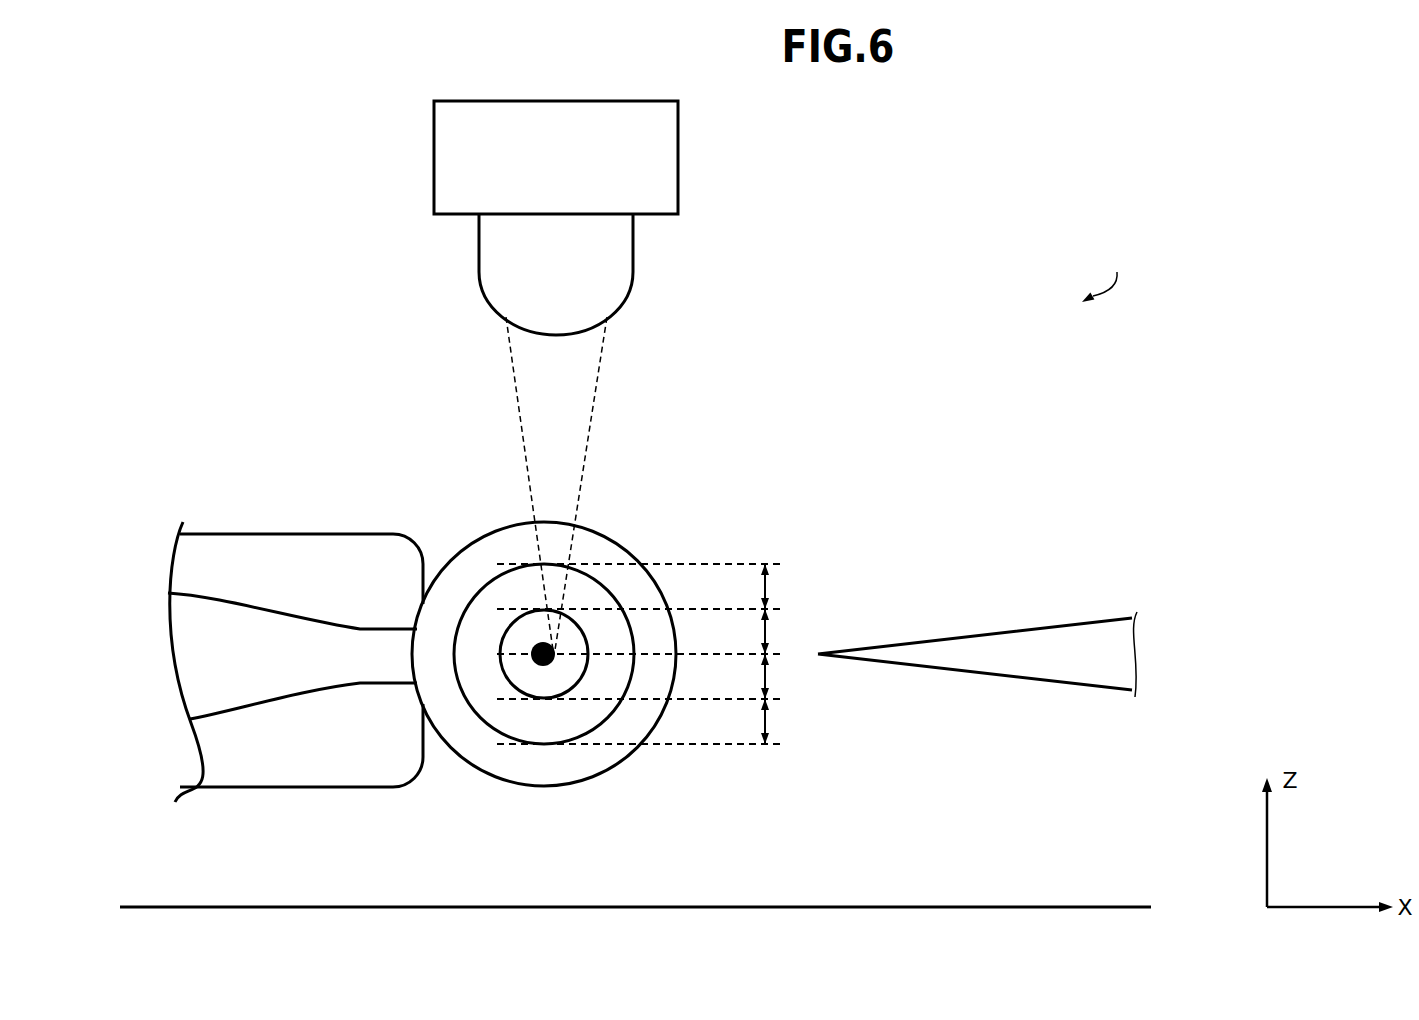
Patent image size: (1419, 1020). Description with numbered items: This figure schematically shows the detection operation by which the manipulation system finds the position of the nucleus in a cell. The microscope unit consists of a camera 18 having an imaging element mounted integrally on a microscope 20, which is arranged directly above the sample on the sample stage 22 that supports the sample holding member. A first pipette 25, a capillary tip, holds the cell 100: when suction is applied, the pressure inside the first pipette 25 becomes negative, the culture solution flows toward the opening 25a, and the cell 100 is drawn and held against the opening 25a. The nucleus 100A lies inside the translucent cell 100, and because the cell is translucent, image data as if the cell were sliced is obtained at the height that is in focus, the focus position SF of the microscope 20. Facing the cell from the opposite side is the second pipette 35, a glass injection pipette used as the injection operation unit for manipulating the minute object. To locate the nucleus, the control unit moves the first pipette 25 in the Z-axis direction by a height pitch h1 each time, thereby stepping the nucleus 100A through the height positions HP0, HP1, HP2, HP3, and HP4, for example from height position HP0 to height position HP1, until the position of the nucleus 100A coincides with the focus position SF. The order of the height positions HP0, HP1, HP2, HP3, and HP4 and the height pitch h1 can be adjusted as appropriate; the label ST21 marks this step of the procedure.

The camera 18 is at (678, 152).
The microscope 20 is at (633, 246).
The first pipette 25 is at (284, 534).
The opening 25a is at (376, 624).
The cell 100 is at (550, 787).
The nucleus 100A is at (532, 660).
The focus position SF is at (555, 652).
The height position HP0 is at (738, 654).
The height position HP1 is at (702, 609).
The height position HP2 is at (657, 564).
The height position HP3 is at (737, 698).
The height position HP4 is at (667, 745).
The height pitch h1 is at (768, 581).
The second pipette 35 is at (1055, 625).
The step ST21 is at (1113, 273).
The sample stage 22 is at (1098, 905).